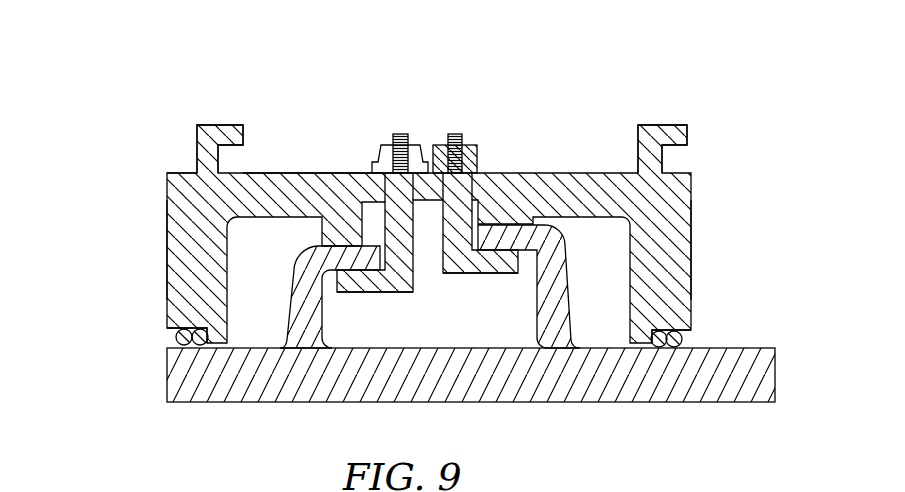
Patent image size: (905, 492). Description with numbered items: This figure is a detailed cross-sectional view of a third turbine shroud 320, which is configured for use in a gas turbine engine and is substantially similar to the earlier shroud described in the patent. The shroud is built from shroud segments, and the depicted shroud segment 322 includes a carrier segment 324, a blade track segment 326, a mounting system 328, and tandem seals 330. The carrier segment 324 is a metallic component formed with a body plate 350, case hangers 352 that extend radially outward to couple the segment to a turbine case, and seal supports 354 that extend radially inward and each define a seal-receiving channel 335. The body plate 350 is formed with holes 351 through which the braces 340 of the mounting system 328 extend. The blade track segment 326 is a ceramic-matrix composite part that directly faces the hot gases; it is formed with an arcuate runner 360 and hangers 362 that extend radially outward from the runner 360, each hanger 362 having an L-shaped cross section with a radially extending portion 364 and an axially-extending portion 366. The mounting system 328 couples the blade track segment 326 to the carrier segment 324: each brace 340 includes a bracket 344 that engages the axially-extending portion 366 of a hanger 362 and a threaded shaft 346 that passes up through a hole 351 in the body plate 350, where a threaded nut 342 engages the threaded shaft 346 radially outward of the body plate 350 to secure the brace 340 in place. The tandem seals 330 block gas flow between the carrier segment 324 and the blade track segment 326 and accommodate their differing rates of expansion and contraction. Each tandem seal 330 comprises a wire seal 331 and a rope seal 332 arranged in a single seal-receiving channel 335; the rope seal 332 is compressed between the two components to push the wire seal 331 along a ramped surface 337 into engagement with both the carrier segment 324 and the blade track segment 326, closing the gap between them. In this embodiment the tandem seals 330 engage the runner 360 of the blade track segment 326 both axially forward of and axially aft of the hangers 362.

The turbine shroud 320 is at (686, 92).
The shroud segment 322 is at (705, 126).
The carrier segment 324 is at (172, 172).
The blade track segment 326 is at (160, 394).
The mounting system 328 is at (479, 130).
The tandem seal 330 is at (212, 357).
The wire seal 331 is at (178, 355).
The rope seal 332 is at (193, 356).
The seal-receiving channel 335 is at (186, 326).
The ramped surface 337 is at (175, 341).
The brace 340 is at (375, 211).
The threaded nut 342 is at (418, 143).
The bracket 344 is at (429, 260).
The threaded shaft 346 is at (400, 131).
The body plate 350 is at (318, 172).
The holes 351 is at (385, 185).
The case hanger 352 is at (221, 124).
The seal support 354 is at (167, 258).
The runner 360 is at (777, 376).
The hanger 362 is at (288, 266).
The radially extending portion 364 is at (288, 306).
The axially-extending portion 366 is at (310, 240).